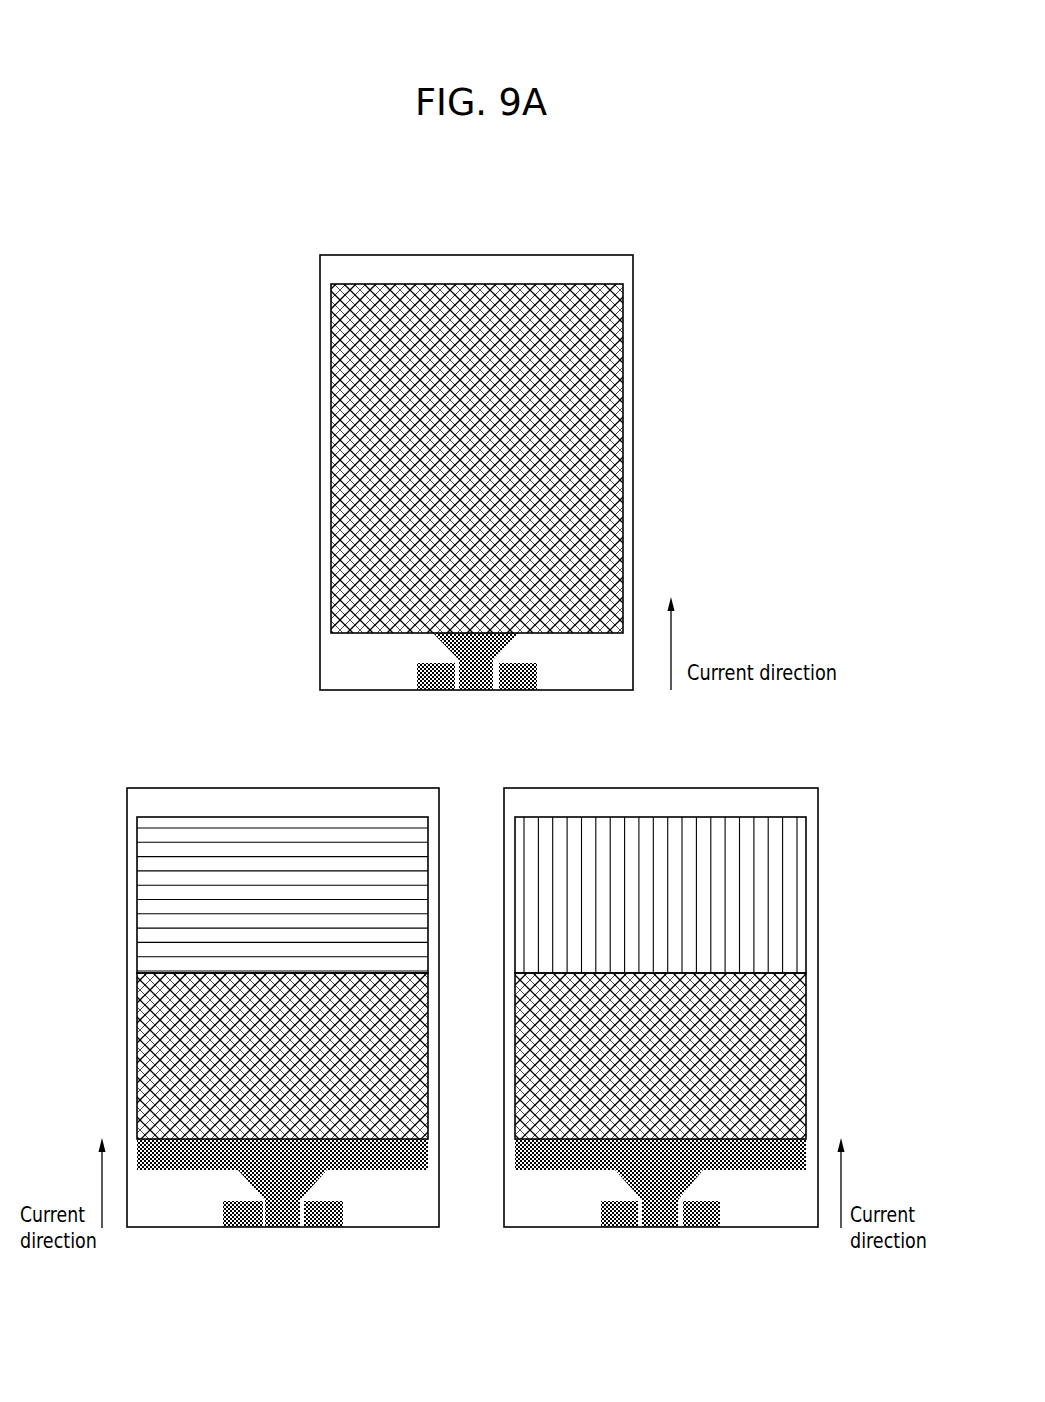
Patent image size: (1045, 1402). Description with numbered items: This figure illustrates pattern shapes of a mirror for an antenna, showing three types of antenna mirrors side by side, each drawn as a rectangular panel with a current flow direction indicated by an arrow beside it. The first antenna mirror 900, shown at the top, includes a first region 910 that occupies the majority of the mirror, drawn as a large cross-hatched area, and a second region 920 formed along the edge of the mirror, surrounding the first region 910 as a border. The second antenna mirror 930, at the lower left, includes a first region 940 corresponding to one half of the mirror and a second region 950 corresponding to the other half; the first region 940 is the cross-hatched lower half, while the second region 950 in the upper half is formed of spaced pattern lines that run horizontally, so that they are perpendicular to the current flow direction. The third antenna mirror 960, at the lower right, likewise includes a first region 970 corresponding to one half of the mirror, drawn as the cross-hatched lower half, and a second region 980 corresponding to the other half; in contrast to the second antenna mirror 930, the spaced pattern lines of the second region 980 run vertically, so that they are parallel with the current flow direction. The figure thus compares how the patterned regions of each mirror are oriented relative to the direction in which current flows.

The first antenna mirror 900 is at (504, 449).
The first region 910 is at (610, 315).
The second region 920 is at (473, 263).
The second antenna mirror 930 is at (248, 984).
The first region 940 is at (222, 1025).
The second region 950 is at (222, 915).
The third antenna mirror 960 is at (706, 984).
The first region 970 is at (743, 1025).
The second region 980 is at (743, 915).